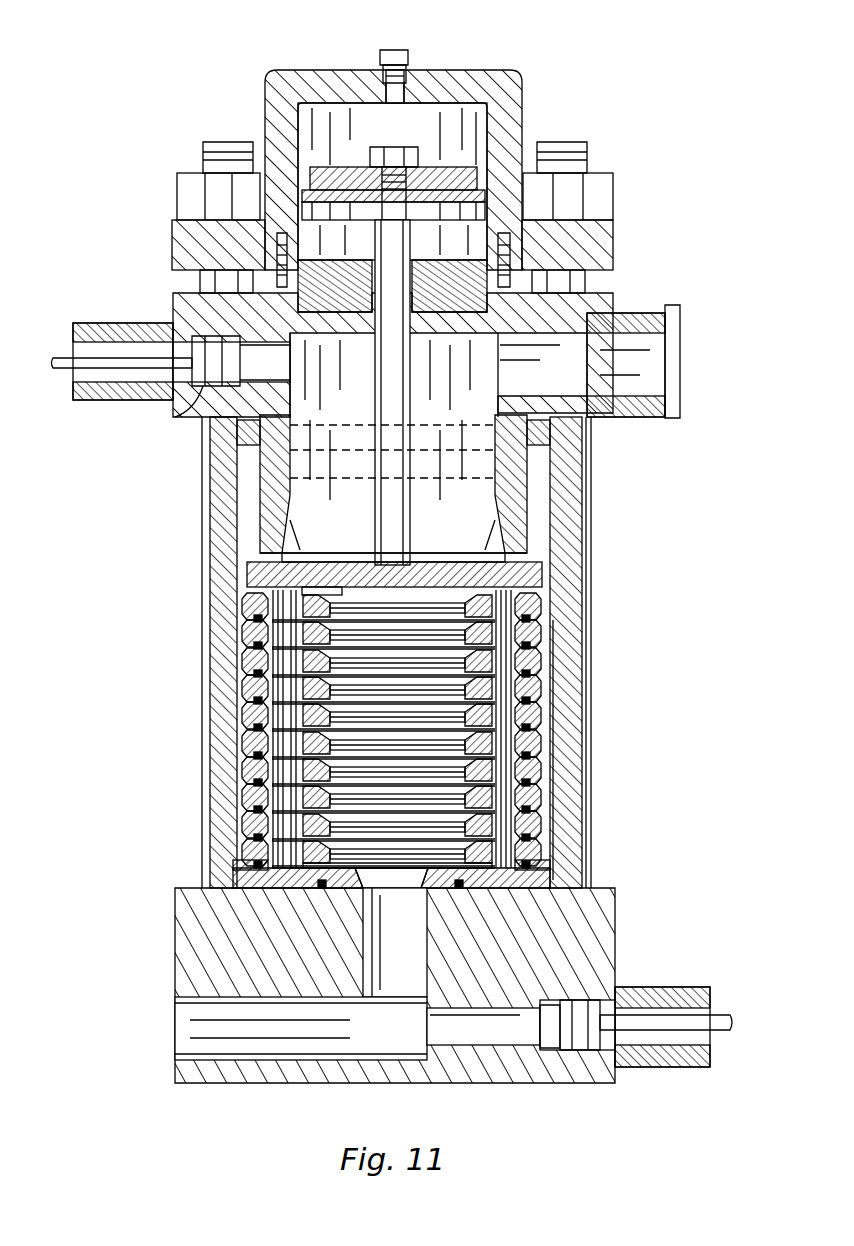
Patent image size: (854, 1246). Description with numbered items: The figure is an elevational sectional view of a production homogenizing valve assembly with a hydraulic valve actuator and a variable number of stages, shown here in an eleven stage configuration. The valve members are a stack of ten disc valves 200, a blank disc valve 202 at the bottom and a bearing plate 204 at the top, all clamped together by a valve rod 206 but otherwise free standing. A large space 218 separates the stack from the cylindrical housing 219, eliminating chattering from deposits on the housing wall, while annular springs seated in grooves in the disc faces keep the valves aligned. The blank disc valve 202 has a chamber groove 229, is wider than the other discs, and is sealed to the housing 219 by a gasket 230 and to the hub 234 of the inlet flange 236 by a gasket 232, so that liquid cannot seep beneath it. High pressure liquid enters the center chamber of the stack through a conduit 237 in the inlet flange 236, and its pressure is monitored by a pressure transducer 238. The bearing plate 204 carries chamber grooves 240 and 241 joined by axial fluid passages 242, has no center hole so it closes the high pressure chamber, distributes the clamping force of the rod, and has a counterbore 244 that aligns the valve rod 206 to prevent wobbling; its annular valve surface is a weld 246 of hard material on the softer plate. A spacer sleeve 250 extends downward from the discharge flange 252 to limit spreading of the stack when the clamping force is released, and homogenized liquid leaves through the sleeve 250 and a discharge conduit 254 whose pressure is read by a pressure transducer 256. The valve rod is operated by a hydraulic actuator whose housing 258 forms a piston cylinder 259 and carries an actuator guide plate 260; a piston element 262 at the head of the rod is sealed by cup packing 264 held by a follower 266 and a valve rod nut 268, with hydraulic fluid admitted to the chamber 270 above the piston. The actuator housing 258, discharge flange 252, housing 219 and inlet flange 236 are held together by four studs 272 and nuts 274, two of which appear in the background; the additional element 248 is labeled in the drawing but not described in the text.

The disc valves 200 is at (540, 760).
The blank disc valve 202 is at (577, 886).
The bearing plate 204 is at (545, 572).
The valve rod 206 is at (412, 492).
The space 218 is at (545, 700).
The cylindrical housing 219 is at (566, 730).
The chamber groove 229 is at (510, 866).
The gasket 230 is at (548, 866).
The gasket 232 is at (370, 876).
The hub 234 is at (383, 905).
The inlet flange 236 is at (615, 936).
The conduit 237 is at (316, 1044).
The pressure transducer 238 is at (560, 1048).
The chamber groove 240 is at (250, 600).
The chamber groove 241 is at (260, 556).
The axial fluid passages 242 is at (248, 578).
The counterbore 244 is at (420, 560).
The weld of hard material 246 is at (338, 598).
The right rods 248 is at (530, 615).
The spacer sleeve 250 is at (530, 485).
The discharge flange 252 is at (610, 293).
The discharge conduit 254 is at (663, 382).
The pressure transducer 256 is at (203, 393).
The housing 258 is at (268, 100).
The piston cylinder 259 is at (352, 102).
The actuator guide plate 260 is at (275, 290).
The piston element 262 is at (487, 212).
The cup packing 264 is at (484, 196).
The follower 266 is at (480, 175).
The valve rod nut 268 is at (433, 120).
The chamber 270 is at (357, 118).
The studs 272 is at (212, 633).
The nuts 274 is at (187, 180).